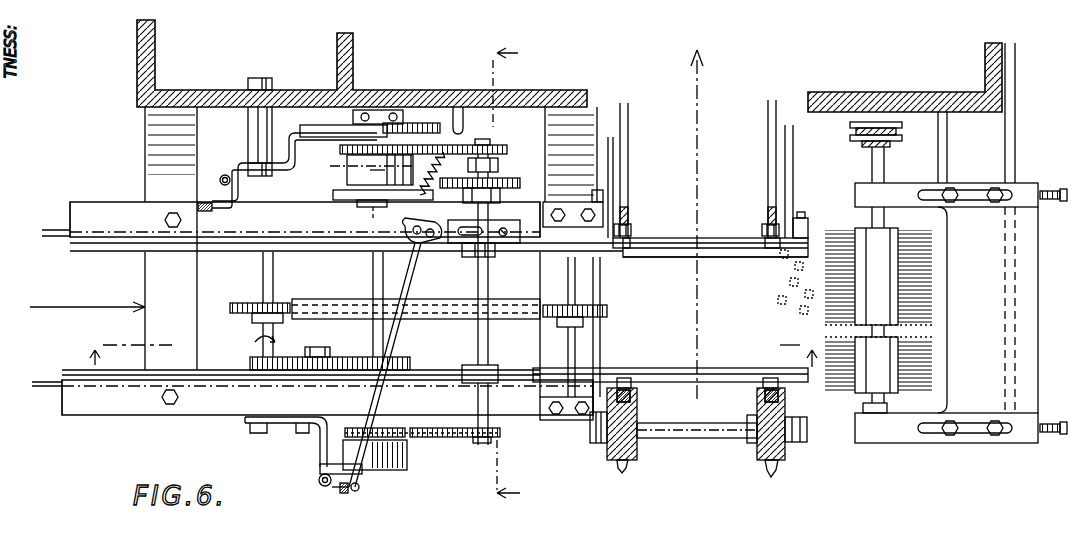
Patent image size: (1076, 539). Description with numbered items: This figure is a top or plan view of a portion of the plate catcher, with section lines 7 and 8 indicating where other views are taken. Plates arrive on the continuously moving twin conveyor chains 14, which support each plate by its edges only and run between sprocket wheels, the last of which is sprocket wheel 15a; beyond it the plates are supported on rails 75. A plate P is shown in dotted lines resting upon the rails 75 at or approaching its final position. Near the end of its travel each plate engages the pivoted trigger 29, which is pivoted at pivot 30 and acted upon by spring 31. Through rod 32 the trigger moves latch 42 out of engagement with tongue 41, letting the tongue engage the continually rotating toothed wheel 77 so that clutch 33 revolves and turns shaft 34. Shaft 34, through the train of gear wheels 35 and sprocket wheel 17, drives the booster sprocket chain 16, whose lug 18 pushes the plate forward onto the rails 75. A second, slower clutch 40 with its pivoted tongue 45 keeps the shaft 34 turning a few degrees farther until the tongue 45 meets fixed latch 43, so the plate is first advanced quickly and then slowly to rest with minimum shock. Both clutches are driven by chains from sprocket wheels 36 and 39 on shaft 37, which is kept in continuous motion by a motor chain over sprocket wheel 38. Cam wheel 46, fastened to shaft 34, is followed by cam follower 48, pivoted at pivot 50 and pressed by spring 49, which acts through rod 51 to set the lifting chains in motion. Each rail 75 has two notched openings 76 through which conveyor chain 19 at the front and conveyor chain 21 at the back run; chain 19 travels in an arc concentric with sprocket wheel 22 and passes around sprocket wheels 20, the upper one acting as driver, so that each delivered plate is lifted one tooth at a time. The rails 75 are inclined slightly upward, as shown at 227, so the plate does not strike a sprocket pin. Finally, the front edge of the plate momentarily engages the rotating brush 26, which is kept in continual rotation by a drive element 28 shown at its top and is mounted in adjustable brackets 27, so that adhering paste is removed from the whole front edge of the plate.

The section line 7 is at (423, 334).
The section line 8 is at (515, 276).
The twin conveyor chains 14 is at (55, 232).
The sprocket wheel 15a is at (500, 228).
The sprocket chain 16 is at (325, 302).
The sprocket wheel 17 is at (247, 303).
The lug 18 is at (588, 318).
The conveyor chain 19 is at (700, 423).
The sprocket wheels 20 is at (634, 462).
The conveyor chain 21 is at (631, 230).
The sprocket wheel 22 is at (767, 172).
The rotating brush 26 is at (838, 395).
The adjustable brackets 27 is at (908, 183).
The pulley 28 is at (874, 122).
The pivoted trigger 29 is at (455, 252).
The pivot 30 is at (428, 250).
The spring 31 is at (431, 190).
The rod 32 is at (391, 340).
The clutch 33 is at (408, 472).
The shaft 34 is at (374, 280).
The train of gear wheels 35 is at (350, 349).
The sprocket wheel 36 is at (502, 440).
The shaft 37 is at (490, 282).
The sprocket wheel 38 is at (513, 182).
The sprocket wheel 39 is at (498, 148).
The clutch 40 is at (347, 163).
The tongue 41 is at (382, 472).
The latch 42 is at (366, 493).
The fixed latch 43 is at (333, 195).
The pivoted tongue 45 is at (373, 175).
The cam wheel 46 is at (426, 123).
The cam follower 48 is at (370, 123).
The spring 49 is at (236, 188).
The pivot 50 is at (253, 133).
The rod 51 is at (212, 206).
The rails 75 is at (687, 252).
The notched openings 76 is at (624, 248).
The toothed wheel 77 is at (413, 448).
The upward inclination 227 is at (732, 257).
The plate P is at (812, 250).